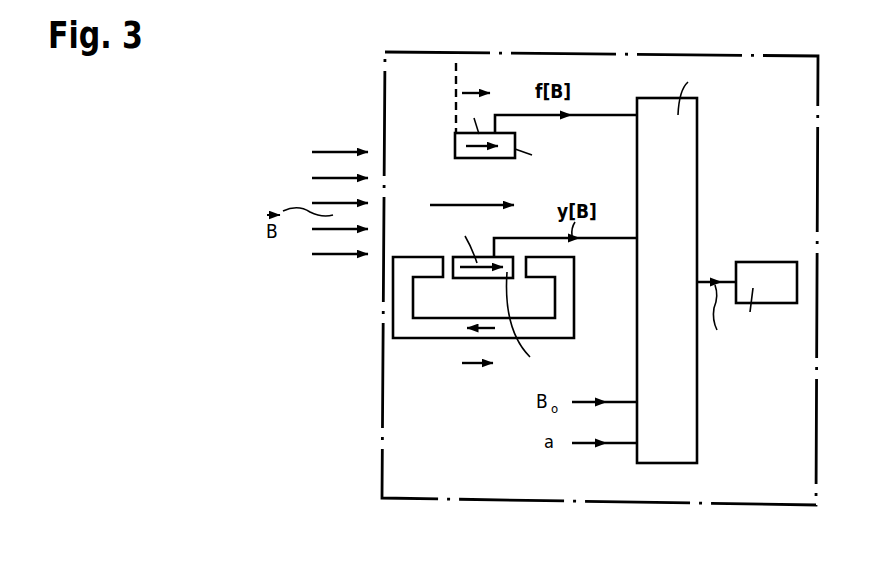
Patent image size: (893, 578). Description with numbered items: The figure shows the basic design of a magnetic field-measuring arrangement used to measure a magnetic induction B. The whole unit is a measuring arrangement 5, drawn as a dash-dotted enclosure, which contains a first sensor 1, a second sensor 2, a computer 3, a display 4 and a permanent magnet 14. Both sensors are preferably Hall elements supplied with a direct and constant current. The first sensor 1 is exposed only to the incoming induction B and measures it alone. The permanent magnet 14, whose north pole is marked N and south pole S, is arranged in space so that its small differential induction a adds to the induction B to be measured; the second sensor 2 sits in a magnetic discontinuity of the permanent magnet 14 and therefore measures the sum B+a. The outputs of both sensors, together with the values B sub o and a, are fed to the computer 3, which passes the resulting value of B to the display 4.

The first sensor 1 is at (468, 150).
The second sensor 2 is at (467, 279).
The computer 3 is at (671, 298).
The display 4 is at (763, 275).
The measuring arrangement 5 is at (531, 486).
The permanent magnet 14 is at (425, 328).